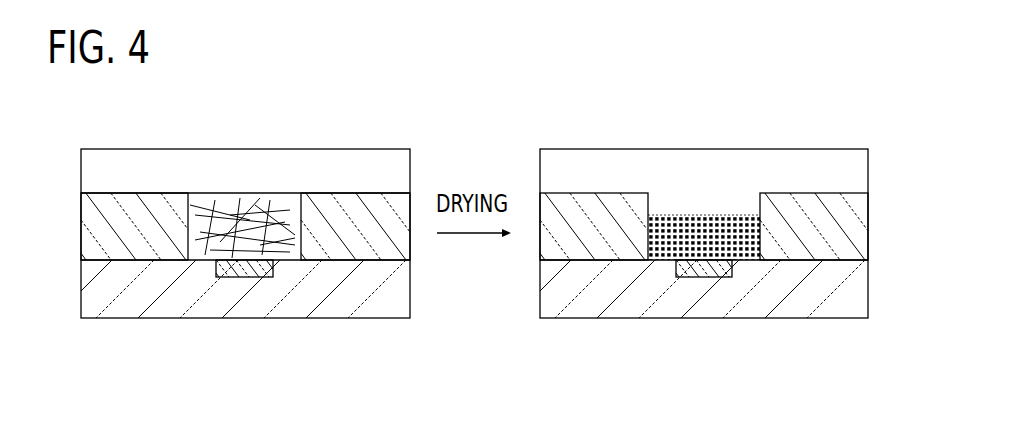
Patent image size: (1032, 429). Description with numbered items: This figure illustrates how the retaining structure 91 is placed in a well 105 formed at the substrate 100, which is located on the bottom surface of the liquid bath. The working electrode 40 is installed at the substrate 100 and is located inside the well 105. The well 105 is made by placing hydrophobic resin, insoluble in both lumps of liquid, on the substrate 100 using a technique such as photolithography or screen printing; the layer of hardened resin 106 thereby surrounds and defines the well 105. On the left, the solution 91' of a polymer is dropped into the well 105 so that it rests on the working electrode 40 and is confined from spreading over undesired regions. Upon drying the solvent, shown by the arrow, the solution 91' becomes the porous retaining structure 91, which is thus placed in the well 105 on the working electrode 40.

The substrate 100 is at (97, 260).
The well 105 is at (192, 211).
The layer of hardened resin 106 is at (352, 193).
The solution of a polymer 91' is at (242, 175).
The retaining structure 91 is at (704, 176).
The working electrode 40 is at (247, 277).